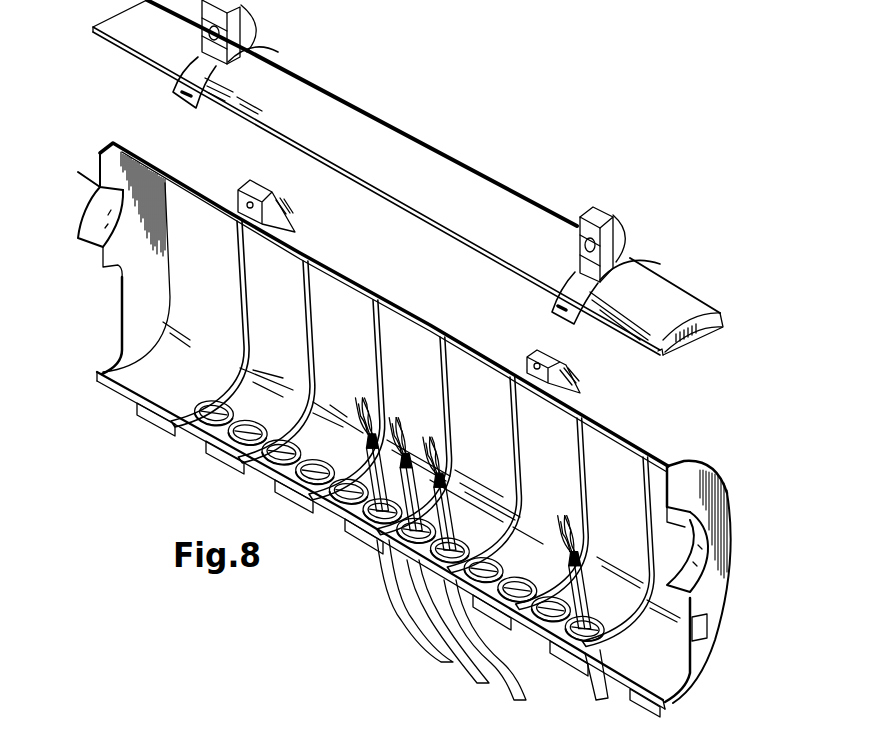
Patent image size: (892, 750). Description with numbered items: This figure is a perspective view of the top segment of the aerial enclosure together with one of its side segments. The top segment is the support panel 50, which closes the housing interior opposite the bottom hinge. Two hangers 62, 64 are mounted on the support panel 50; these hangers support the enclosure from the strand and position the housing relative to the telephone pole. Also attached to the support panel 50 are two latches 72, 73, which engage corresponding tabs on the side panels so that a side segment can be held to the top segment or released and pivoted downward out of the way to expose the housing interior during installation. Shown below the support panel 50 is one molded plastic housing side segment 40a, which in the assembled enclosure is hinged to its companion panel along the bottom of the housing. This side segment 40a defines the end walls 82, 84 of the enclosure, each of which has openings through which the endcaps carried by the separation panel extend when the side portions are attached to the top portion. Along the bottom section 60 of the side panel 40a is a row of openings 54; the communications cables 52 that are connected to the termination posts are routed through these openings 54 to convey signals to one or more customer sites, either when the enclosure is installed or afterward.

The support panel 50 is at (413, 163).
The hanger 62 is at (256, 24).
The hanger 64 is at (626, 222).
The latch 72 is at (178, 95).
The latch 73 is at (568, 326).
The bottom section 60 is at (413, 430).
The end wall 82 is at (120, 270).
The end wall 84 is at (716, 581).
The housing side segment 40a is at (178, 382).
The openings 54 is at (296, 470).
The communications cables 52 is at (443, 645).